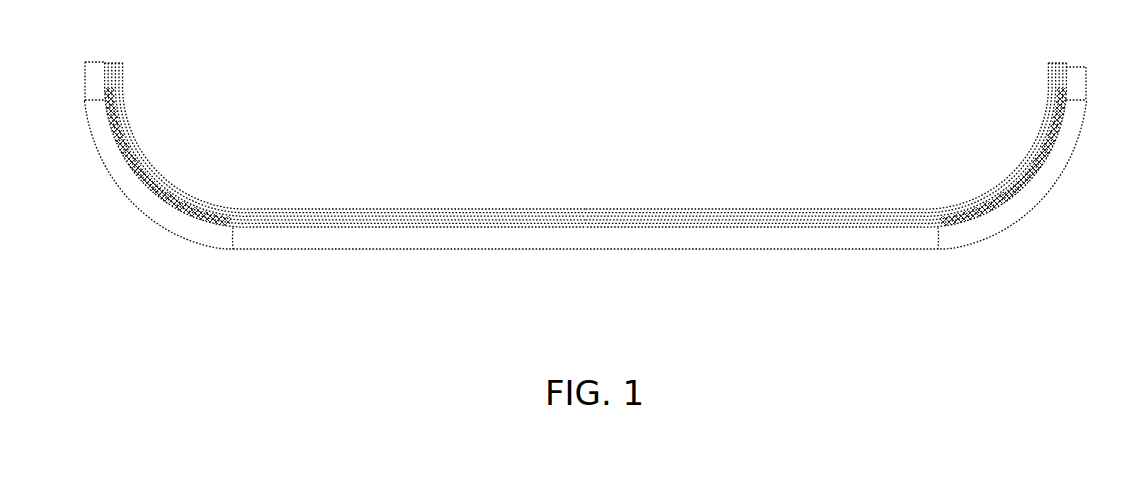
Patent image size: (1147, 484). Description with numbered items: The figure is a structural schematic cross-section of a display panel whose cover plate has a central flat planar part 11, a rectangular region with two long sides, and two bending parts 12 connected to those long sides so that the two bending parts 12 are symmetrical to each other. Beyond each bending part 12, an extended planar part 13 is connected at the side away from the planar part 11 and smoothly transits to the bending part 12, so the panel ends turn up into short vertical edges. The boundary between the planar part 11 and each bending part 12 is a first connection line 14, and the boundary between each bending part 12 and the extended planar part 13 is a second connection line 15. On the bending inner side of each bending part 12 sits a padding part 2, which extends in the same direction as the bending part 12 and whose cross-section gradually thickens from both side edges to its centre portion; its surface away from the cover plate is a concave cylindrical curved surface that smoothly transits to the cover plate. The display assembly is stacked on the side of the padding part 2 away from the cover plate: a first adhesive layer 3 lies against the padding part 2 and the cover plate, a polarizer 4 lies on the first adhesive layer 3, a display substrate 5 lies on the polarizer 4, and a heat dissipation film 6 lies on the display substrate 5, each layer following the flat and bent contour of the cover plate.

The padding part 2 is at (593, 145).
The first adhesive layer 3 is at (358, 222).
The polarizer 4 is at (394, 220).
The display substrate 5 is at (433, 220).
The heat dissipation film 6 is at (489, 215).
The planar part 11 is at (517, 232).
The bending part 12 is at (138, 196).
The extended planar part 13 is at (96, 63).
The first connection line 14 is at (234, 238).
The second connection line 15 is at (95, 97).